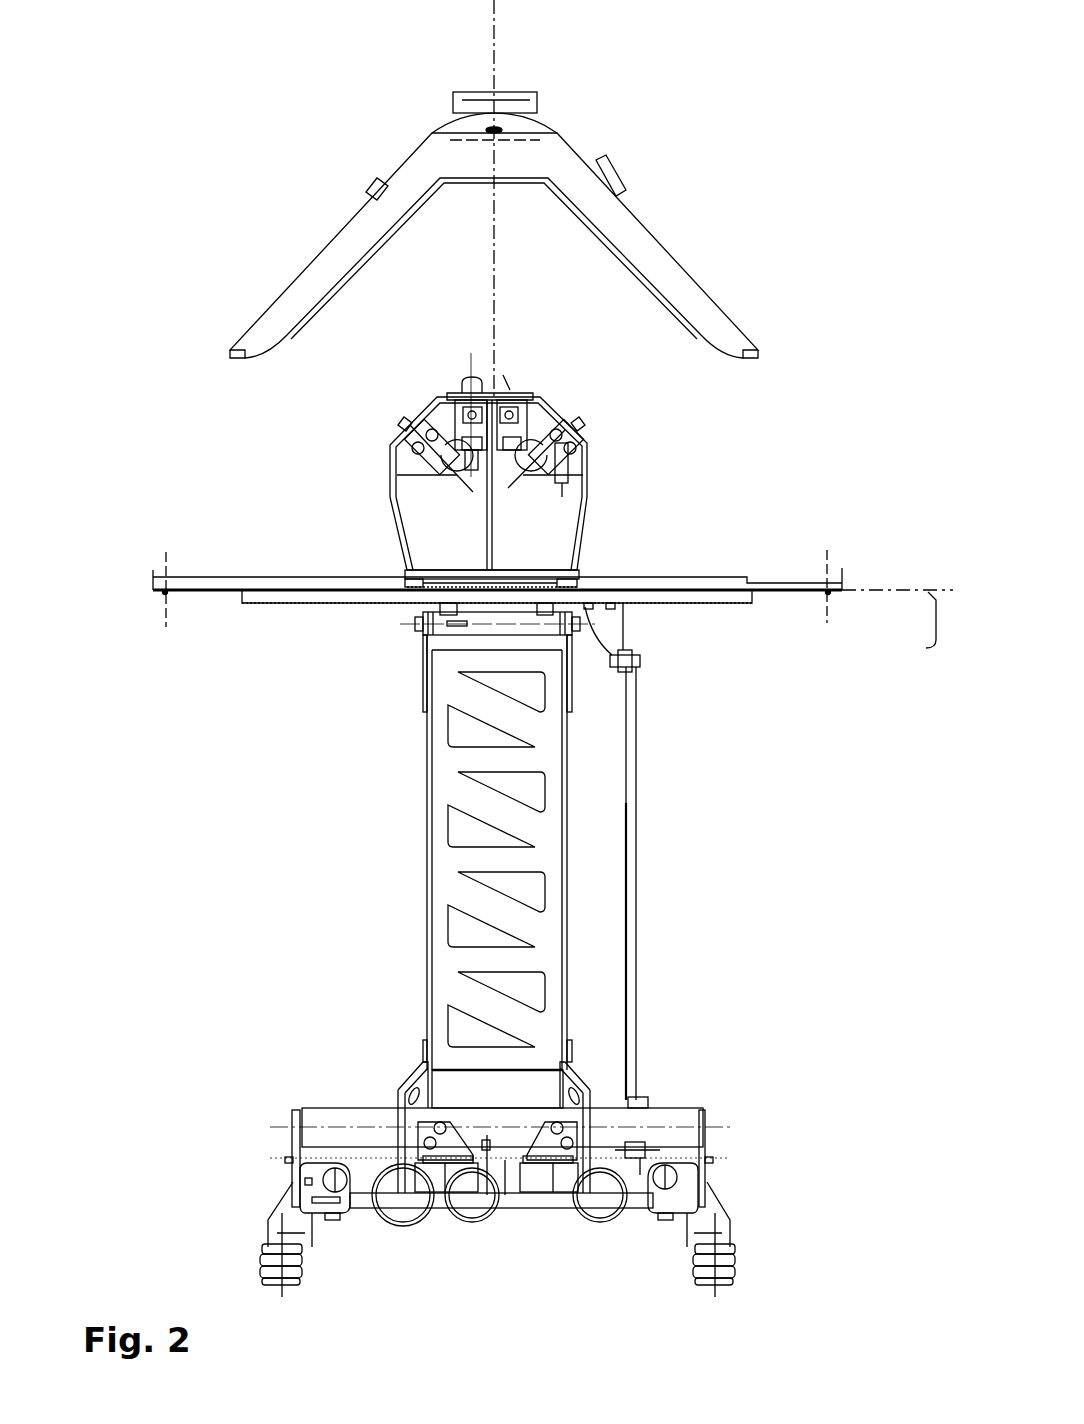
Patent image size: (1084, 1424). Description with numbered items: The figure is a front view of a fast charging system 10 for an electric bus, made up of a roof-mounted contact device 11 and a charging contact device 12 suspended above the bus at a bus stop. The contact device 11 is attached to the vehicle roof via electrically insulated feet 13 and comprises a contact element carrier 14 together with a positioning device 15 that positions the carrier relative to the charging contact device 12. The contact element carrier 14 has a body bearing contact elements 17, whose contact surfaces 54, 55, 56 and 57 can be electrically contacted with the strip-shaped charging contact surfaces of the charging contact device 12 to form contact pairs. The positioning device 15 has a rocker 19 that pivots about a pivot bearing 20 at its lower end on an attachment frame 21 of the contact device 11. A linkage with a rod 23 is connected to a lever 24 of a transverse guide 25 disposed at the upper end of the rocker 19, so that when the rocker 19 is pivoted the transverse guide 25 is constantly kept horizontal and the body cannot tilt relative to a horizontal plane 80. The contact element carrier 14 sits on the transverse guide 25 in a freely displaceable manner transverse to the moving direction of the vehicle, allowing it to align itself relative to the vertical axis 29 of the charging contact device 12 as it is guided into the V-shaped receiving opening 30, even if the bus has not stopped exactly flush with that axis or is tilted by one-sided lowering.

The fast charging system 10 is at (499, 678).
The contact device 11 is at (425, 972).
The charging contact device 12 is at (345, 208).
The electrically insulated feet 13 is at (287, 1280).
The contact element carrier 14 is at (708, 481).
The positioning device 15 is at (556, 855).
The contact elements 17 is at (483, 370).
The rocker 19 is at (450, 773).
The pivot bearing 20 is at (509, 1194).
The attachment frame 21 is at (293, 1108).
The rod 23 is at (630, 803).
The lever 24 is at (613, 637).
The transverse guide 25 is at (230, 580).
The vertical axis 29 is at (497, 31).
The receiving opening 30 is at (480, 441).
The contact surface 54 is at (412, 420).
The contact surface 55 is at (577, 417).
The contact surface 56 is at (467, 373).
The contact surface 57 is at (507, 390).
The horizontal plane 80 is at (897, 626).